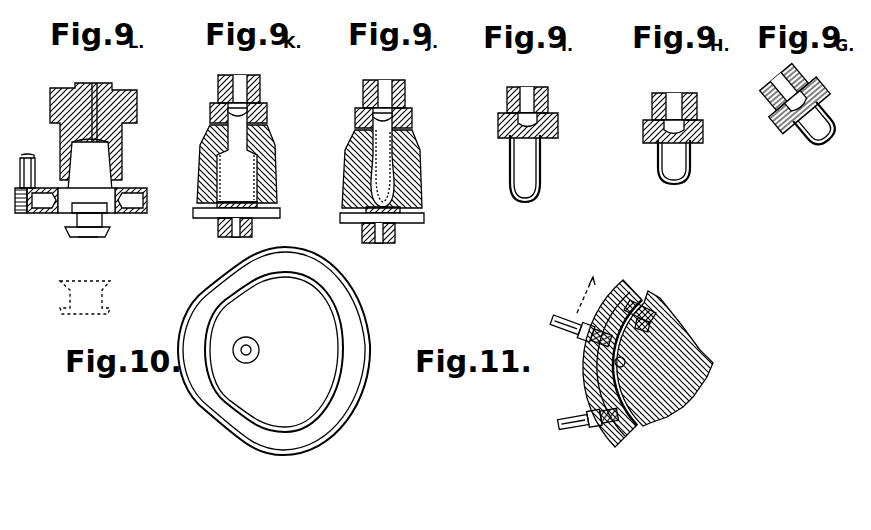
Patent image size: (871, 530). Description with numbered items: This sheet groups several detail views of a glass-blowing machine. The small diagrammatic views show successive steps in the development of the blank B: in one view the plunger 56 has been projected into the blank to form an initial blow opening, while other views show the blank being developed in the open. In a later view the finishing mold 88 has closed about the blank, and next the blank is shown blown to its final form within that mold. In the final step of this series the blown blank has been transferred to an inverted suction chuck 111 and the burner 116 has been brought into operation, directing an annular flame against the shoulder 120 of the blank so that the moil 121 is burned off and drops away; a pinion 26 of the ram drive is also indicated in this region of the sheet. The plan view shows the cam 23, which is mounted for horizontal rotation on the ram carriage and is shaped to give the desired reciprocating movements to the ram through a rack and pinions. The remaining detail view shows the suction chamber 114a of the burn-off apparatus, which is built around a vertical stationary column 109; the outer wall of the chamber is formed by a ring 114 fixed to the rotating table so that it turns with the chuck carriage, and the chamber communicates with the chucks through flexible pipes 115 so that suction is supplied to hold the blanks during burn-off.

In FIG. 9L, the suction chuck 111 is at (62, 137).
In FIG. 9L, the pinion 26 is at (17, 203).
In FIG. 9L, the burner 116 is at (133, 222).
In FIG. 9L, the shoulder 120 is at (66, 212).
In FIG. 9L, the moil 121 is at (100, 221).
In FIG. 9J, the finishing mold 88 is at (412, 186).
In FIG. 9H, the blank B is at (660, 172).
In FIG. 9G, the plunger 56 is at (780, 86).
In FIG. 10, the cam 23 is at (362, 302).
In FIG. 11, the stationary column 109 is at (677, 343).
In FIG. 11, the ring 114 is at (626, 282).
In FIG. 11, the suction chamber 114a is at (617, 435).
In FIG. 11, the flexible pipe 115 is at (570, 420).